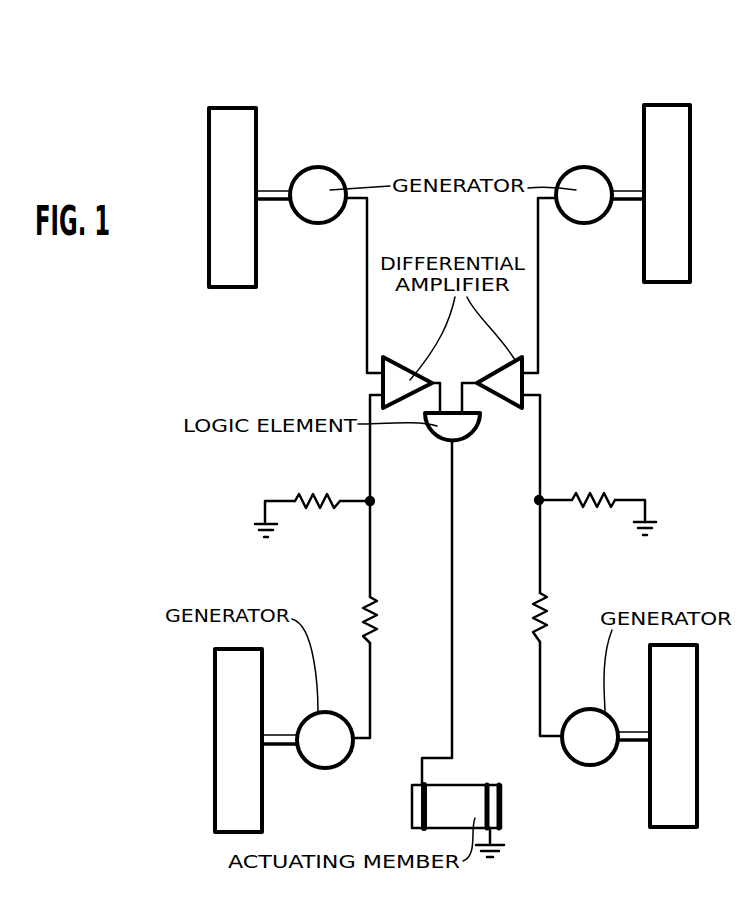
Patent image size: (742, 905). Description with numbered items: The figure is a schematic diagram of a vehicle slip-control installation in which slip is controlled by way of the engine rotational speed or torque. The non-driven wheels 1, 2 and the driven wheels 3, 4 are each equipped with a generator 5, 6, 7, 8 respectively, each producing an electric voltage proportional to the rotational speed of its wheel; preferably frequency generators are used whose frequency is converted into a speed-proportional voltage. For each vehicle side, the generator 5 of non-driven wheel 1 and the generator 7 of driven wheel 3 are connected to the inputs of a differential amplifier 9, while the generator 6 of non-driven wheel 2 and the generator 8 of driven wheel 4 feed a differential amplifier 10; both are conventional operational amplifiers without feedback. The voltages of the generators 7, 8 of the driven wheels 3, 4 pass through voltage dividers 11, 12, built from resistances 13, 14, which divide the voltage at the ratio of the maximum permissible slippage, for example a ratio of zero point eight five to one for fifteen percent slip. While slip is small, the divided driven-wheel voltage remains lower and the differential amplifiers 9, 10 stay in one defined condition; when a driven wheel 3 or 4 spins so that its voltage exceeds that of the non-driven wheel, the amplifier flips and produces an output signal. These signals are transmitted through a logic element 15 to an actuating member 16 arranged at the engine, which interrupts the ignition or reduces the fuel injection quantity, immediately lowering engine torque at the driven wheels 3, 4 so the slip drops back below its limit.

The non-driven wheel 1 is at (256, 134).
The non-driven wheel 2 is at (644, 126).
The driven wheel 3 is at (262, 668).
The driven wheel 4 is at (650, 668).
The generator 5 is at (322, 171).
The generator 6 is at (573, 176).
The generator 7 is at (345, 715).
The generator 8 is at (598, 722).
The differential amplifier 9 is at (400, 372).
The differential amplifier 10 is at (500, 368).
The voltage divider 11 is at (350, 528).
The voltage divider 12 is at (551, 521).
The resistance 13 is at (380, 620).
The resistance 14 is at (310, 496).
The logic element 15 is at (480, 420).
The actuating member 16 is at (478, 785).